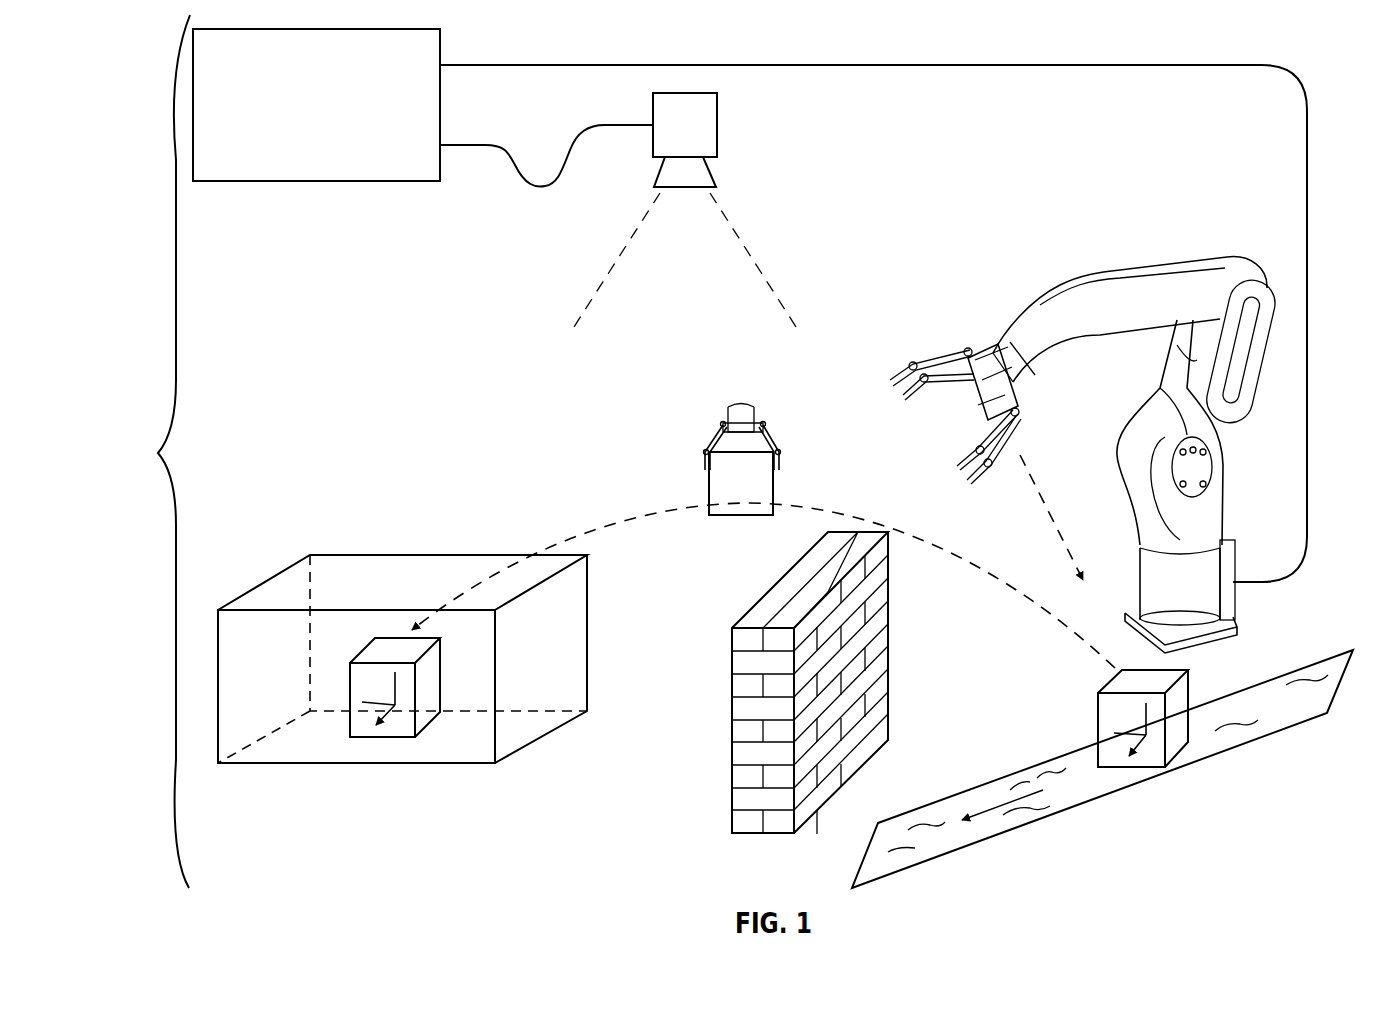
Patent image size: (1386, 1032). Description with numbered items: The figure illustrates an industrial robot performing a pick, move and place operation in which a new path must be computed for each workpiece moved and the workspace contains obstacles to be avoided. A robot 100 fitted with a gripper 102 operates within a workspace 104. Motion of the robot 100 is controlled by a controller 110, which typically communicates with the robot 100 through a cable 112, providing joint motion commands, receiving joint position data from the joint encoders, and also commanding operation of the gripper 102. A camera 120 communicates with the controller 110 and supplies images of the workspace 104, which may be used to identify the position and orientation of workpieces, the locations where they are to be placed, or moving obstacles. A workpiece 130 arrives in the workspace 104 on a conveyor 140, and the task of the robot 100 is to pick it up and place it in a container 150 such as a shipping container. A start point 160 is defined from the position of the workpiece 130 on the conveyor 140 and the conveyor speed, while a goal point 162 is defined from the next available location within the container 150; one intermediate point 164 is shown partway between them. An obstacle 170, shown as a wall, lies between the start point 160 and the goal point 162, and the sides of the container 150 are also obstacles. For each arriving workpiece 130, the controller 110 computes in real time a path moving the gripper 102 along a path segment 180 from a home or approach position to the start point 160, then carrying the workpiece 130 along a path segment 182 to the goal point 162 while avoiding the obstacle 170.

The robot 100 is at (1167, 215).
The gripper 102 is at (1010, 420).
The workspace 104 is at (153, 451).
The controller 110 is at (317, 181).
The cable 112 is at (1015, 65).
The camera 120 is at (717, 125).
The workpiece 130 is at (1190, 680).
The conveyor 140 is at (1280, 733).
The container 150 is at (540, 738).
The start point 160 is at (1148, 735).
The goal point 162 is at (398, 703).
The intermediate point 164 is at (784, 488).
The obstacle 170 is at (732, 833).
The path segment 180 is at (1058, 530).
The path segment 182 is at (620, 515).